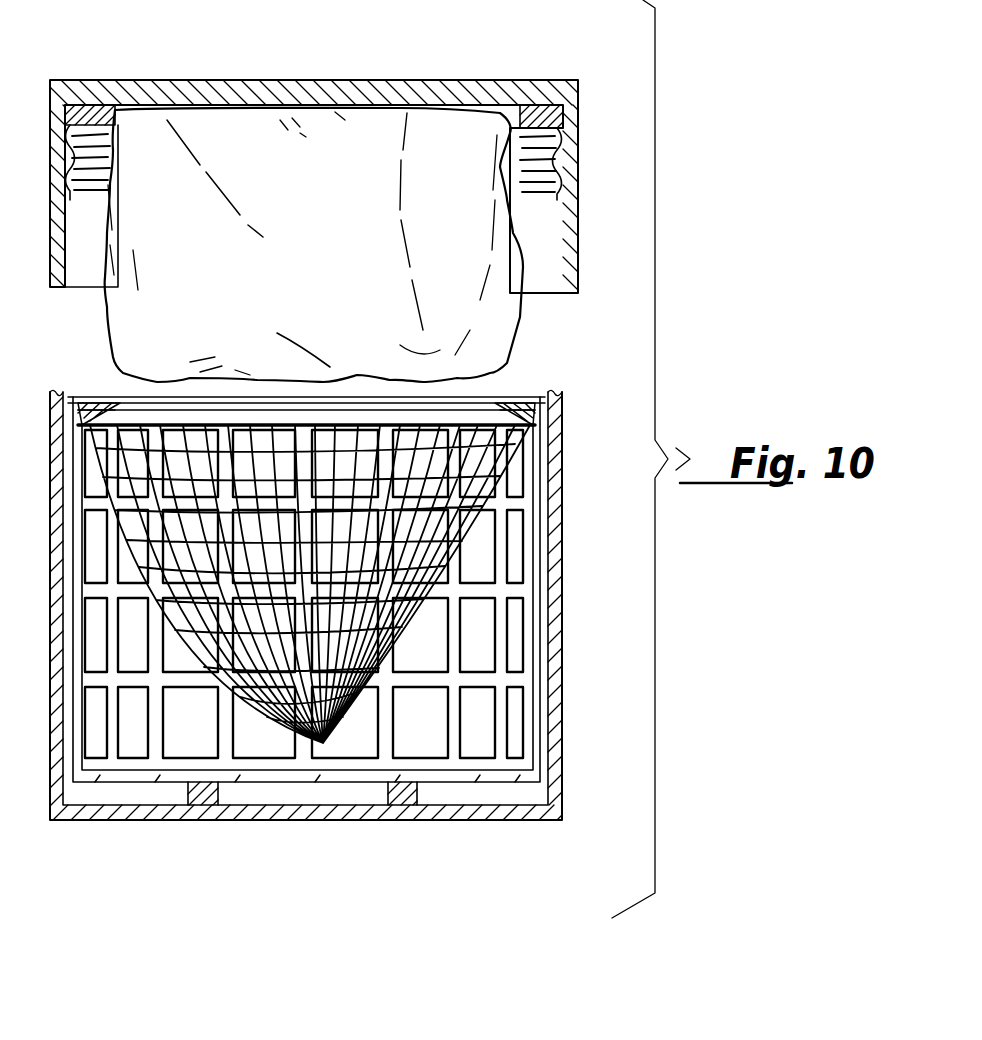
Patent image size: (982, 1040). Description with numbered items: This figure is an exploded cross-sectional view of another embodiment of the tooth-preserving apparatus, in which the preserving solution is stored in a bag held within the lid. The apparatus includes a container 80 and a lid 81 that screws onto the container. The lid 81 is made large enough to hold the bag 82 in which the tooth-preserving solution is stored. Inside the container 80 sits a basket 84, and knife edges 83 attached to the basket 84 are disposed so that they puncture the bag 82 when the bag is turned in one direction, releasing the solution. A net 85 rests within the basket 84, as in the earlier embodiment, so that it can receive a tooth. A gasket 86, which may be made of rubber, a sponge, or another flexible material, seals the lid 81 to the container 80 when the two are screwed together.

The container 80 is at (553, 570).
The lid 81 is at (577, 195).
The bag 82 is at (465, 285).
The knife edges 83 is at (85, 415).
The basket 84 is at (538, 490).
The net 85 is at (410, 620).
The gasket 86 is at (533, 107).